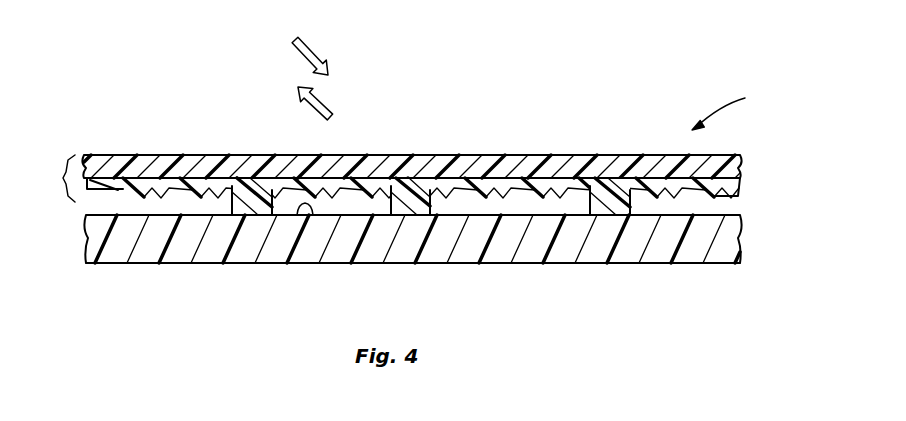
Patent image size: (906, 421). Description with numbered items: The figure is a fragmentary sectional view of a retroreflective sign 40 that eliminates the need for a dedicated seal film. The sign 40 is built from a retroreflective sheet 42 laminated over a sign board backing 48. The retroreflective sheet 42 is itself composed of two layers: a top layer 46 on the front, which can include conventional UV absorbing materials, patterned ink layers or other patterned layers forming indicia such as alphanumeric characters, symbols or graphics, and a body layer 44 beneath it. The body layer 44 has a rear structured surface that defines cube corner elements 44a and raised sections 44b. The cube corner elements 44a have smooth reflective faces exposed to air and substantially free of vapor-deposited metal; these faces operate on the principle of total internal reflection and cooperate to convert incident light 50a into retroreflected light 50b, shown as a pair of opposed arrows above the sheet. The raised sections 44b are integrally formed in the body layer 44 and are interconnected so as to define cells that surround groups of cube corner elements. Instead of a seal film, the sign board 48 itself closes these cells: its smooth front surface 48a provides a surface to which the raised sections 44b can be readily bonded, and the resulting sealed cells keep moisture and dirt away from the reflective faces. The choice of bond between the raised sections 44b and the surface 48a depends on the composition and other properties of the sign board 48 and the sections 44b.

The retroreflective sign 40 is at (734, 109).
The retroreflective sheet 42 is at (53, 178).
The body layer 44 is at (740, 186).
The cube corner elements 44a is at (230, 207).
The raised sections 44b is at (239, 208).
The top layer 46 is at (492, 168).
The sign board backing 48 is at (496, 256).
The smooth front surface 48a is at (308, 216).
The incident light 50a is at (309, 50).
The retroreflected light 50b is at (300, 93).